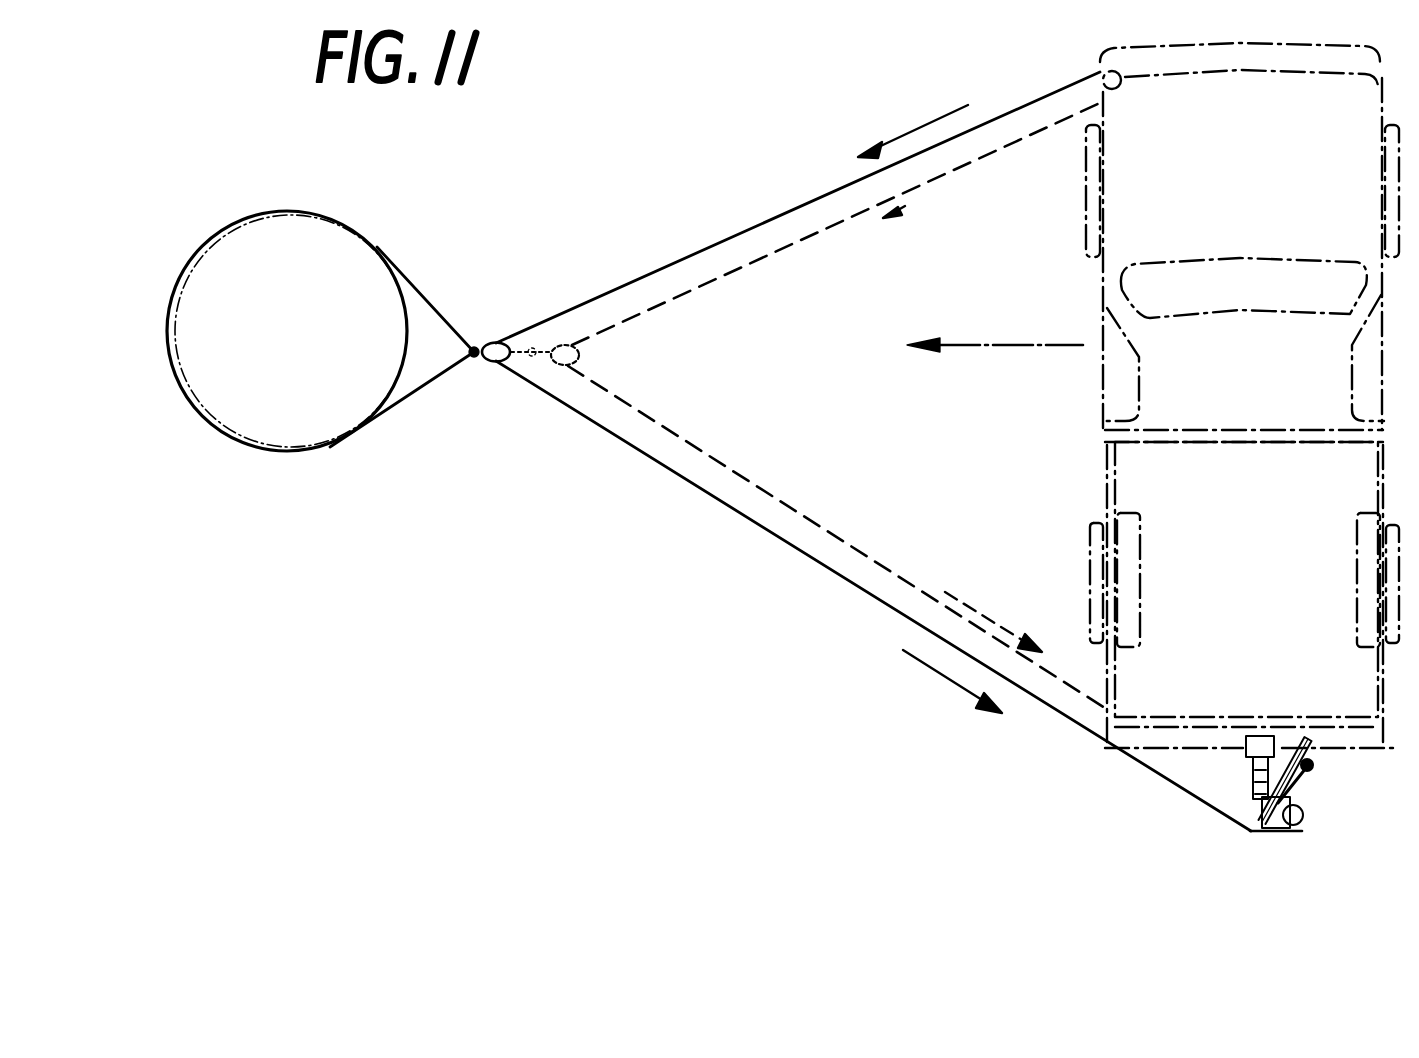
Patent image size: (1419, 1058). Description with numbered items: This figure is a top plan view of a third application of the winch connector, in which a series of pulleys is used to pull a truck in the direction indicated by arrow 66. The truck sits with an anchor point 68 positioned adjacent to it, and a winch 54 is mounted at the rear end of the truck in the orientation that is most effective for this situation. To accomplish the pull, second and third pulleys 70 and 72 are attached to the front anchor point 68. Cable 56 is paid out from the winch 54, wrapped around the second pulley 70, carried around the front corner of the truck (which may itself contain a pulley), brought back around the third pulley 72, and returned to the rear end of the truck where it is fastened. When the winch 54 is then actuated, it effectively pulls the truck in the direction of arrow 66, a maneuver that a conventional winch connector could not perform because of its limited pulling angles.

The winch 54 is at (1288, 803).
The cable 56 is at (818, 471).
The arrow 66 is at (981, 348).
The anchor point 68 is at (303, 405).
The second pulley 70 is at (487, 362).
The third pulley 72 is at (581, 353).